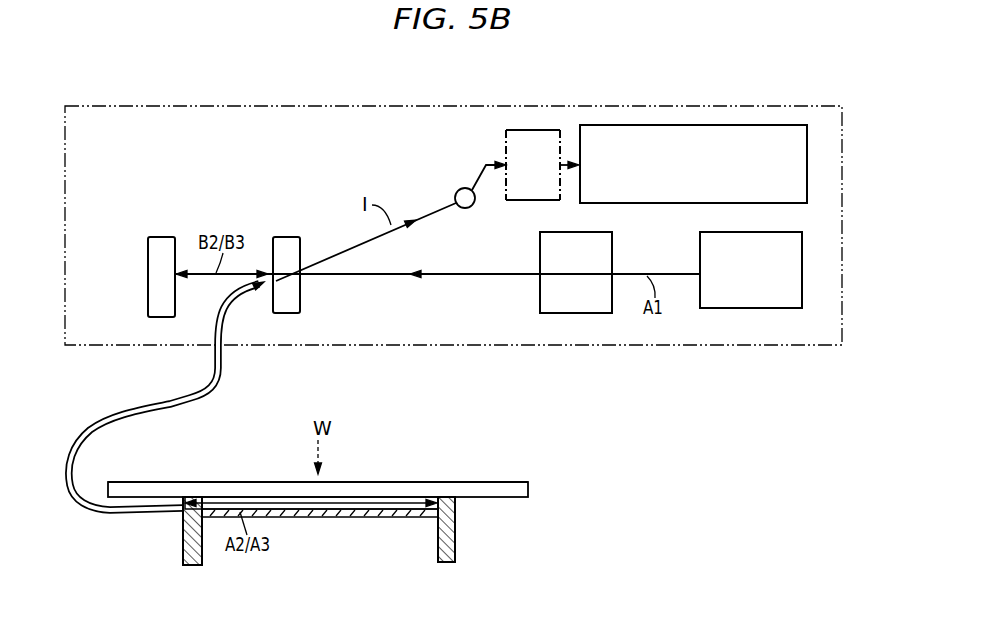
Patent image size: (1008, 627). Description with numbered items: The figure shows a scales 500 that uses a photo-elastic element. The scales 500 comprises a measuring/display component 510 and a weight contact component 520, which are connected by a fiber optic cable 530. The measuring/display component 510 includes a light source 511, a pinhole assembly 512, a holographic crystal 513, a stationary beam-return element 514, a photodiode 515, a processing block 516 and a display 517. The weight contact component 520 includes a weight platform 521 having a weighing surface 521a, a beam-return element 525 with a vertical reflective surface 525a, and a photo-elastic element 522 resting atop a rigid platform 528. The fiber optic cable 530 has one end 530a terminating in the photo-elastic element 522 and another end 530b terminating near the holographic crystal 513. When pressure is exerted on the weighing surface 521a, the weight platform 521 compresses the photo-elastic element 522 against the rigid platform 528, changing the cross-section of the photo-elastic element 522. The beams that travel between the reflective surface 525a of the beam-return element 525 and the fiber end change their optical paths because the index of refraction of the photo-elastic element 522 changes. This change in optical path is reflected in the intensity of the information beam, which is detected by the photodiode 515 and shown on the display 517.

The scales 500 is at (740, 464).
The measuring/display component 510 is at (787, 68).
The light source 511 is at (800, 268).
The pinhole assembly 512 is at (546, 246).
The holographic crystal 513 is at (283, 239).
The stationary beam-return element 514 is at (158, 240).
The photodiode 515 is at (460, 188).
The processing block 516 is at (531, 130).
The display 517 is at (692, 128).
The weight contact component 520 is at (574, 492).
The weight platform 521 is at (520, 487).
The weighing surface 521a is at (497, 480).
The photo-elastic element 522 is at (310, 504).
The beam-return element 525 is at (456, 506).
The vertical reflective surface 525a is at (437, 496).
The rigid platform 528 is at (366, 517).
The fiber optic cable 530 is at (147, 400).
The fiber optic cable end 530a is at (190, 504).
The fiber optic cable end 530b is at (263, 287).